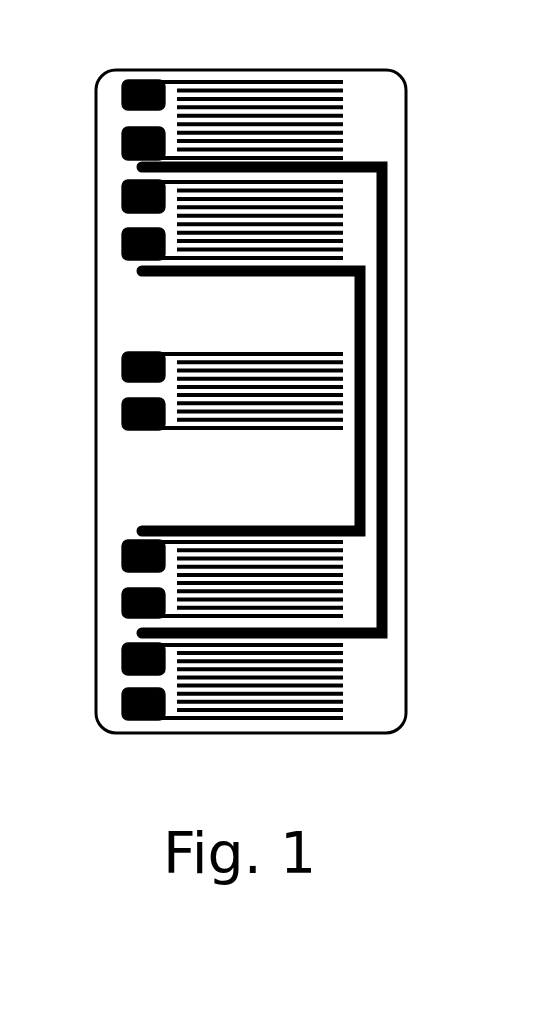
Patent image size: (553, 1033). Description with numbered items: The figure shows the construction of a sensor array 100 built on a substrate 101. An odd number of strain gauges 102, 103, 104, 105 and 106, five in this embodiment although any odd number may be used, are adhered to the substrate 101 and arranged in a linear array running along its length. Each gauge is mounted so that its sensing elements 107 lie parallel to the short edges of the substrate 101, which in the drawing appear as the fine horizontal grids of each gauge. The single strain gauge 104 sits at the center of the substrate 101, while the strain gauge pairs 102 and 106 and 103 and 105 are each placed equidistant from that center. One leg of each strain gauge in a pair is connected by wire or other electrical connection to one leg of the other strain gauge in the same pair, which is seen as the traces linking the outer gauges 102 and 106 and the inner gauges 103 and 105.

The sensor array 100 is at (305, 404).
The substrate 101 is at (407, 330).
The strain gauge 102 is at (343, 87).
The strain gauge 103 is at (343, 186).
The strain gauge 104 is at (315, 457).
The strain gauge 105 is at (343, 543).
The strain gauge 106 is at (343, 650).
The sensing elements 107 is at (290, 397).